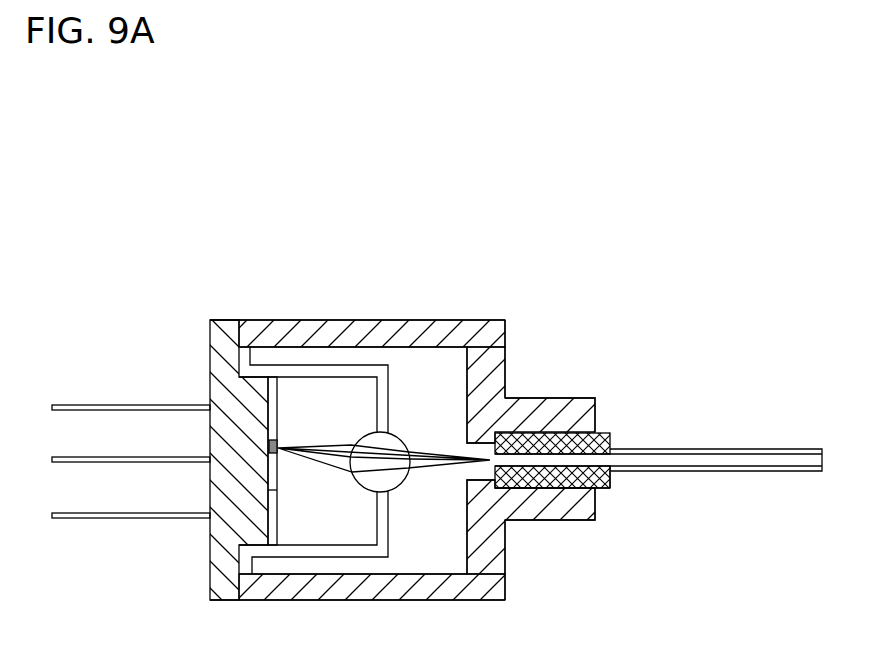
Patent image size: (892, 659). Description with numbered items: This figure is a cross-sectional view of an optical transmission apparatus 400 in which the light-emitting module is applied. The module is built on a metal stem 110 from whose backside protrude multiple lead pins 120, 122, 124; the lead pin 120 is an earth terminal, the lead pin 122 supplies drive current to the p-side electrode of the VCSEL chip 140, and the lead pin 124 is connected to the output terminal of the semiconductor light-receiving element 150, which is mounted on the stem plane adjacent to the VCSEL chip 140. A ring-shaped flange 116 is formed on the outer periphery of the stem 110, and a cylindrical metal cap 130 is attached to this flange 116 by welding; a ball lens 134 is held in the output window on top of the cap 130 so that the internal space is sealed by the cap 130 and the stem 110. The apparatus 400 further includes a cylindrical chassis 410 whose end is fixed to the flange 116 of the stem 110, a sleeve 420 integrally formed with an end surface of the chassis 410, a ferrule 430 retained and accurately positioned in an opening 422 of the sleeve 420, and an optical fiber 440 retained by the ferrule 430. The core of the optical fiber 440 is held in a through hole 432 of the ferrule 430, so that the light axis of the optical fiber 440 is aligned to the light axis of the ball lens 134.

The optical transmission apparatus 400 is at (431, 221).
The metal stem 110 is at (228, 600).
The flange 116 is at (228, 320).
The lead pin 120 is at (103, 404).
The lead pin 122 is at (106, 456).
The lead pin 124 is at (102, 519).
The metal cap 130 is at (352, 548).
The ball lens 134 is at (390, 478).
The VCSEL chip 140 is at (276, 442).
The semiconductor light-receiving element 150 is at (273, 485).
The chassis 410 is at (498, 320).
The sleeve 420 is at (540, 397).
The opening 422 is at (582, 431).
The ferrule 430 is at (604, 489).
The through hole 432 is at (610, 482).
The optical fiber 440 is at (738, 448).